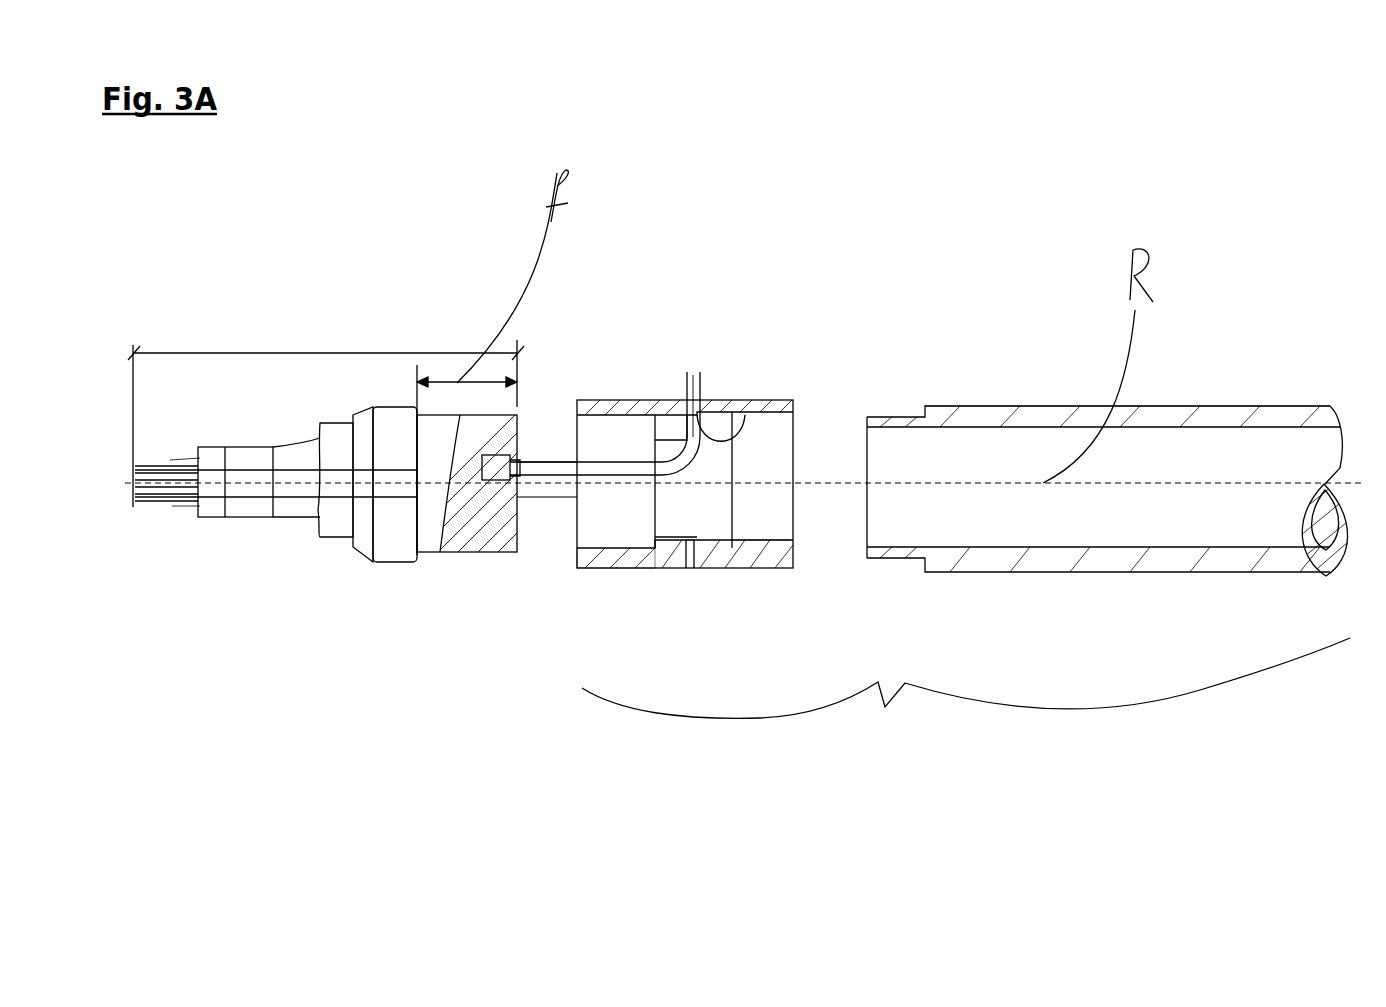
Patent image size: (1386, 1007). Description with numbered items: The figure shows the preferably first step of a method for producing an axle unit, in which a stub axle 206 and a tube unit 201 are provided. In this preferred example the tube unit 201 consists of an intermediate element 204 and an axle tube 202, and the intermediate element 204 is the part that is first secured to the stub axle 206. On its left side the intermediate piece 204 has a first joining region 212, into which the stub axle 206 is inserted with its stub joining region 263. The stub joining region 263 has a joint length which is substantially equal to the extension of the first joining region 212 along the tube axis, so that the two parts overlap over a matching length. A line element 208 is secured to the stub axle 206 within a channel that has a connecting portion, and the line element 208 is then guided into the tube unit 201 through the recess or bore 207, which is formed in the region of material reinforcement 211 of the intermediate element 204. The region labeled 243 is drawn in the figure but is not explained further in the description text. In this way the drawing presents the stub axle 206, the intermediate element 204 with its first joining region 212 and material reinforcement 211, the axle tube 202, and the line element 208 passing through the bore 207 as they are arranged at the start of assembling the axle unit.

The tube unit 201 is at (885, 707).
The axle tube 202 is at (1027, 415).
The intermediate element 204 is at (632, 402).
The stub axle 206 is at (300, 352).
The recess or bore 207 is at (689, 540).
The line element 208 is at (735, 445).
The material reinforcement 211 is at (720, 548).
The first joining region 212 is at (607, 548).
The seat 243 is at (800, 427).
The stub joining region 263 is at (433, 413).